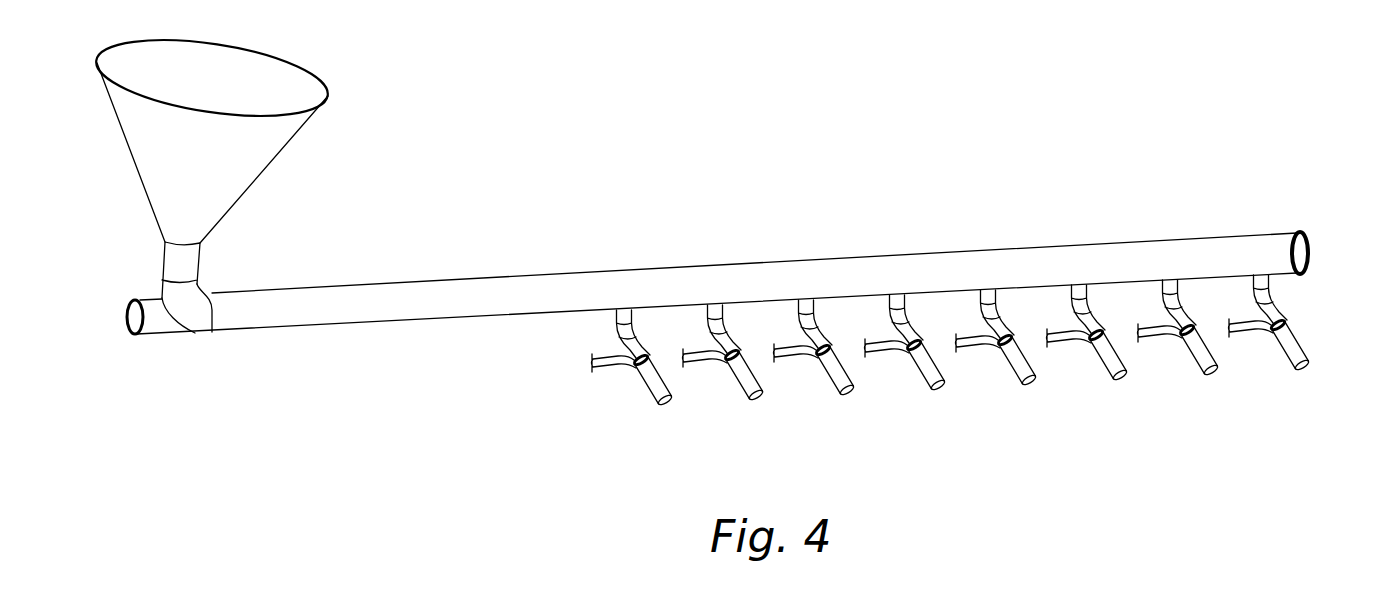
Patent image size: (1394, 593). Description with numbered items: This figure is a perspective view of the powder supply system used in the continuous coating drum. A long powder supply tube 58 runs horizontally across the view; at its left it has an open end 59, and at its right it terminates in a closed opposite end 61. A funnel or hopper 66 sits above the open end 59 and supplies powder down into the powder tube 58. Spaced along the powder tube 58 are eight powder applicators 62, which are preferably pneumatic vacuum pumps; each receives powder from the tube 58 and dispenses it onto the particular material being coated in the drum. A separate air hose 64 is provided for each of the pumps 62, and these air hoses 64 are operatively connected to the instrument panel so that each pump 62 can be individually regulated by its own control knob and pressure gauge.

The powder supply tube 58 is at (503, 287).
The open end 59 is at (128, 318).
The closed opposite end 61 is at (1308, 250).
The powder applicator 62 is at (954, 375).
The air hose 64 is at (928, 380).
The funnel 66 is at (275, 148).